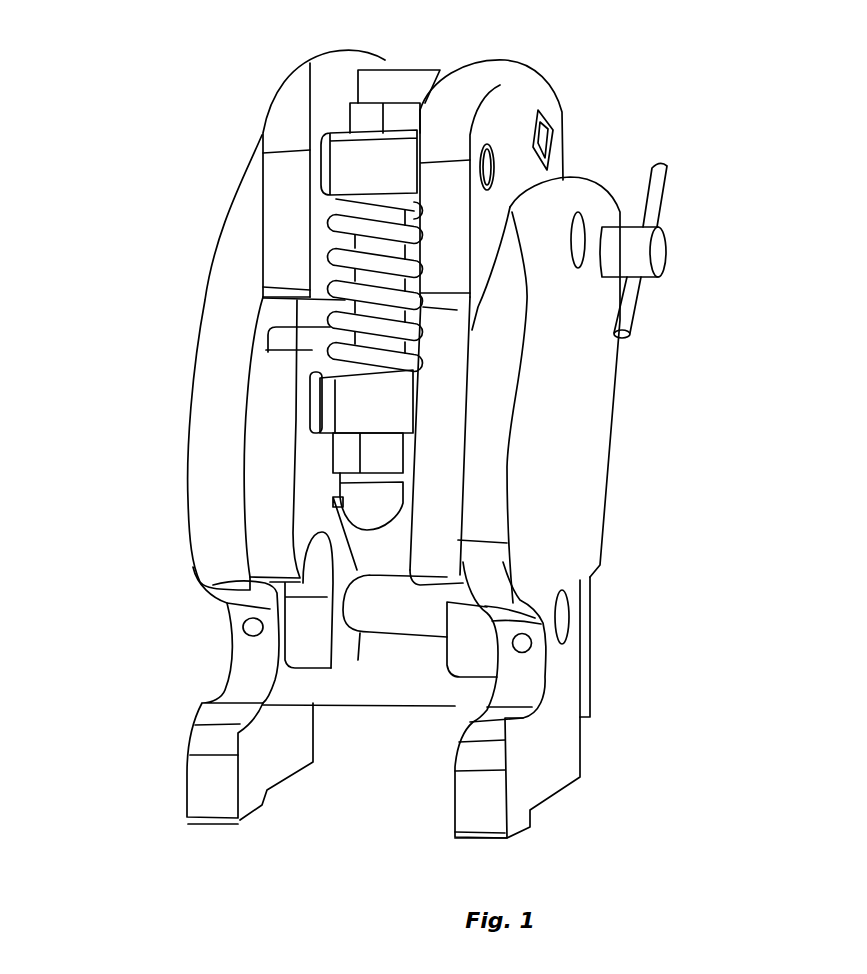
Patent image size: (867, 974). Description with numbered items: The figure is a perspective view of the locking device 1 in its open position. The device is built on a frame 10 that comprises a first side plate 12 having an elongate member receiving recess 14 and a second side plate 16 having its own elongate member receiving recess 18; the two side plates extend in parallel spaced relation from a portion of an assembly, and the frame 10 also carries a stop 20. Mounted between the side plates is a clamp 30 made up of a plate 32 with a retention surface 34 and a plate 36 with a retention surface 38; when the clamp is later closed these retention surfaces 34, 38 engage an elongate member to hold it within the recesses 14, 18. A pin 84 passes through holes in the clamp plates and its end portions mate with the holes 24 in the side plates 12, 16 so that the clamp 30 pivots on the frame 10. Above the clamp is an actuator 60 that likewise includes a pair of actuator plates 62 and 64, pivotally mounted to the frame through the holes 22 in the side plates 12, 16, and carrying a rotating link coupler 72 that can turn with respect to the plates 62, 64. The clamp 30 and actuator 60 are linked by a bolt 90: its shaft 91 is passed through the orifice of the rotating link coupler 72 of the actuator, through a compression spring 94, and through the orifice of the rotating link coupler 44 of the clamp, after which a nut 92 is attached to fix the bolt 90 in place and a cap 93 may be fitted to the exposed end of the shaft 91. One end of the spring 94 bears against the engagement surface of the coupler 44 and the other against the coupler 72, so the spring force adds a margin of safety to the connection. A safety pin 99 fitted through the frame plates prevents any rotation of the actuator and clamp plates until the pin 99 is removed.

The locking device 1 is at (203, 860).
The frame 10 is at (560, 813).
The first side plate 12 is at (586, 357).
The elongate member receiving recess 14 is at (525, 685).
The second side plate 16 is at (217, 449).
The elongate member receiving recess 18 is at (238, 655).
The stop 20 is at (433, 683).
The holes 22 is at (588, 233).
The holes 24 is at (565, 610).
The clamp 30 is at (303, 528).
The plate 32 is at (566, 441).
The retention surface 34 is at (405, 576).
The plate 36 is at (272, 410).
The retention surface 38 is at (318, 567).
The rotating link coupler 44 is at (335, 398).
The actuator 60 is at (250, 120).
The actuator plate 62 is at (523, 87).
The actuator plate 64 is at (305, 83).
The rotating link coupler 72 is at (377, 163).
The pin 84 is at (382, 607).
The bolt 90 is at (380, 110).
The shaft 91 is at (377, 268).
The nut 92 is at (347, 450).
The cap 93 is at (373, 502).
The compression spring 94 is at (352, 217).
The safety pin 99 is at (665, 248).